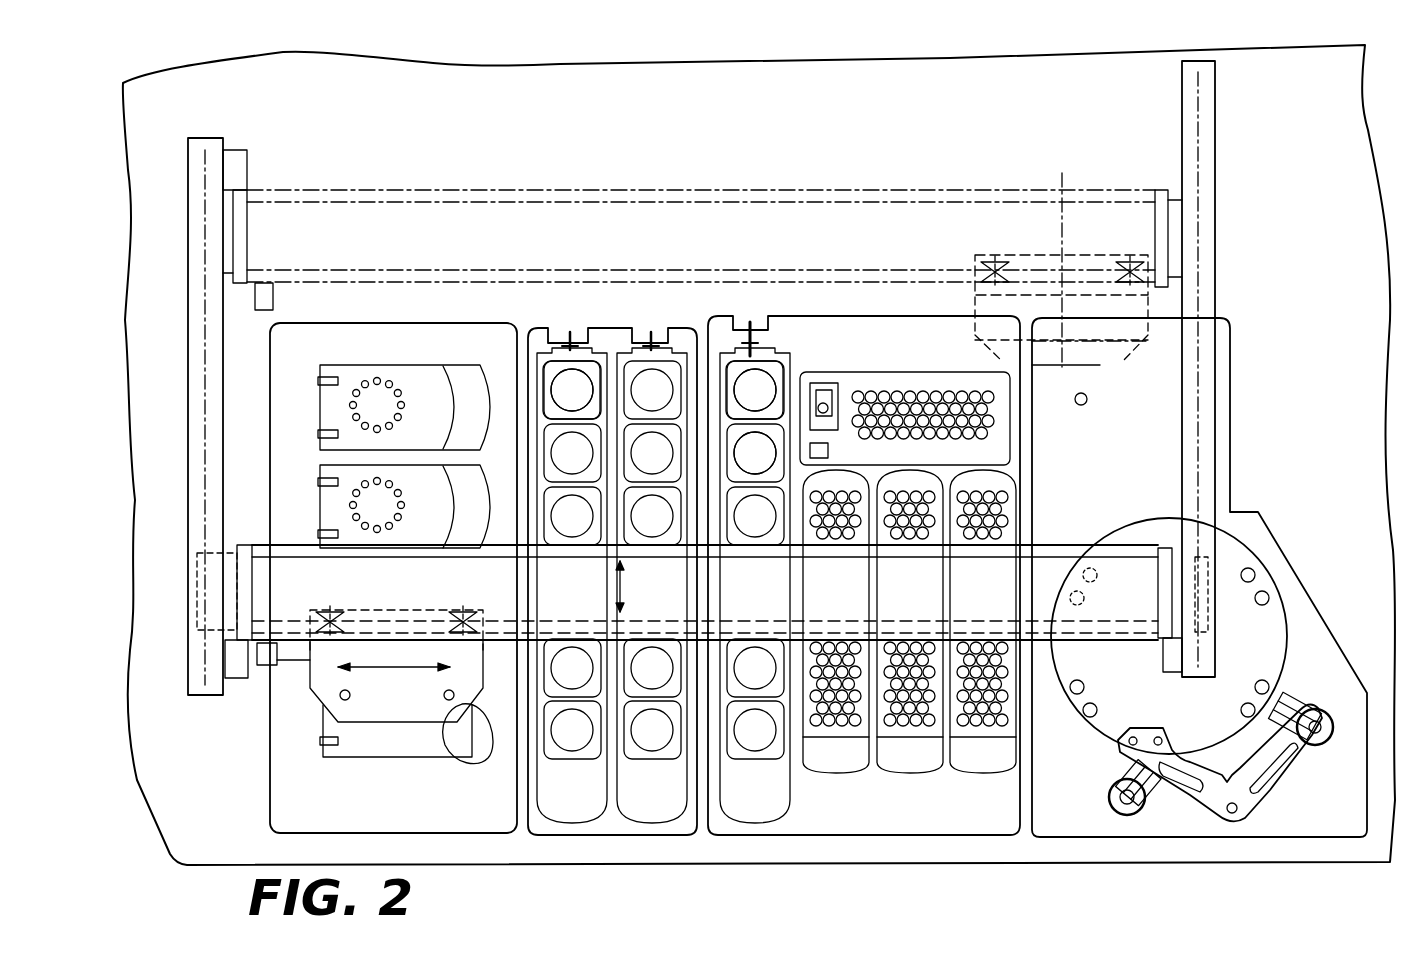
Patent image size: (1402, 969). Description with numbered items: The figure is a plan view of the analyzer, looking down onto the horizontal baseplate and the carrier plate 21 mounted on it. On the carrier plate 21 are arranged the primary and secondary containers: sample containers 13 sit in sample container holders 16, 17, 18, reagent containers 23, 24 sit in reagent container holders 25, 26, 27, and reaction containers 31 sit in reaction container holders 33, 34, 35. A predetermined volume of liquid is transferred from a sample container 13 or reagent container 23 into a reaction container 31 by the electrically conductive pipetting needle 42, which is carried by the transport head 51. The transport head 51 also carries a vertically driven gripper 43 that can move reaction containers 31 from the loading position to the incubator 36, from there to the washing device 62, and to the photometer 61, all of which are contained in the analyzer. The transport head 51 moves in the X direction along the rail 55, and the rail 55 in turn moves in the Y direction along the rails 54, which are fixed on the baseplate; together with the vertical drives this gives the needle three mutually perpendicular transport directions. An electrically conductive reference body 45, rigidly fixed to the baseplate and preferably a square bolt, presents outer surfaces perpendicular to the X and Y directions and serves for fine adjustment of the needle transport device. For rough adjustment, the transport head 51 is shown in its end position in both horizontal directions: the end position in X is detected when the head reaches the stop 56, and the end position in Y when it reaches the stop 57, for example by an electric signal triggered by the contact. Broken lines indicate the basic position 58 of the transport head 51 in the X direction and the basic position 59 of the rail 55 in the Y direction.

The sample container 13 is at (373, 375).
The sample container holder 16 is at (405, 708).
The sample container holder 17 is at (395, 431).
The sample container holder 18 is at (345, 472).
The carrier plate 21 is at (895, 607).
The reagent container 23 is at (563, 388).
The reagent container 24 is at (753, 385).
The reagent container holder 25 is at (532, 614).
The reagent container holder 26 is at (637, 810).
The reagent container holder 27 is at (776, 610).
The reaction container 31 is at (942, 624).
The reaction container holder 33 is at (815, 758).
The reaction container holder 34 is at (893, 762).
The reaction container holder 35 is at (995, 757).
The incubator 36 is at (858, 380).
The pipetting needle 42 is at (348, 700).
The gripper 43 is at (449, 700).
The reference body 45 is at (755, 453).
The transport head 51 is at (475, 762).
The rail 54 is at (192, 237).
The rail 55 is at (714, 590).
The stop 56 is at (258, 300).
The stop 57 is at (238, 657).
The basic position 58 is at (1062, 183).
The basic position 59 is at (1157, 345).
The photometer 61 is at (1199, 577).
The washing device 62 is at (1103, 748).